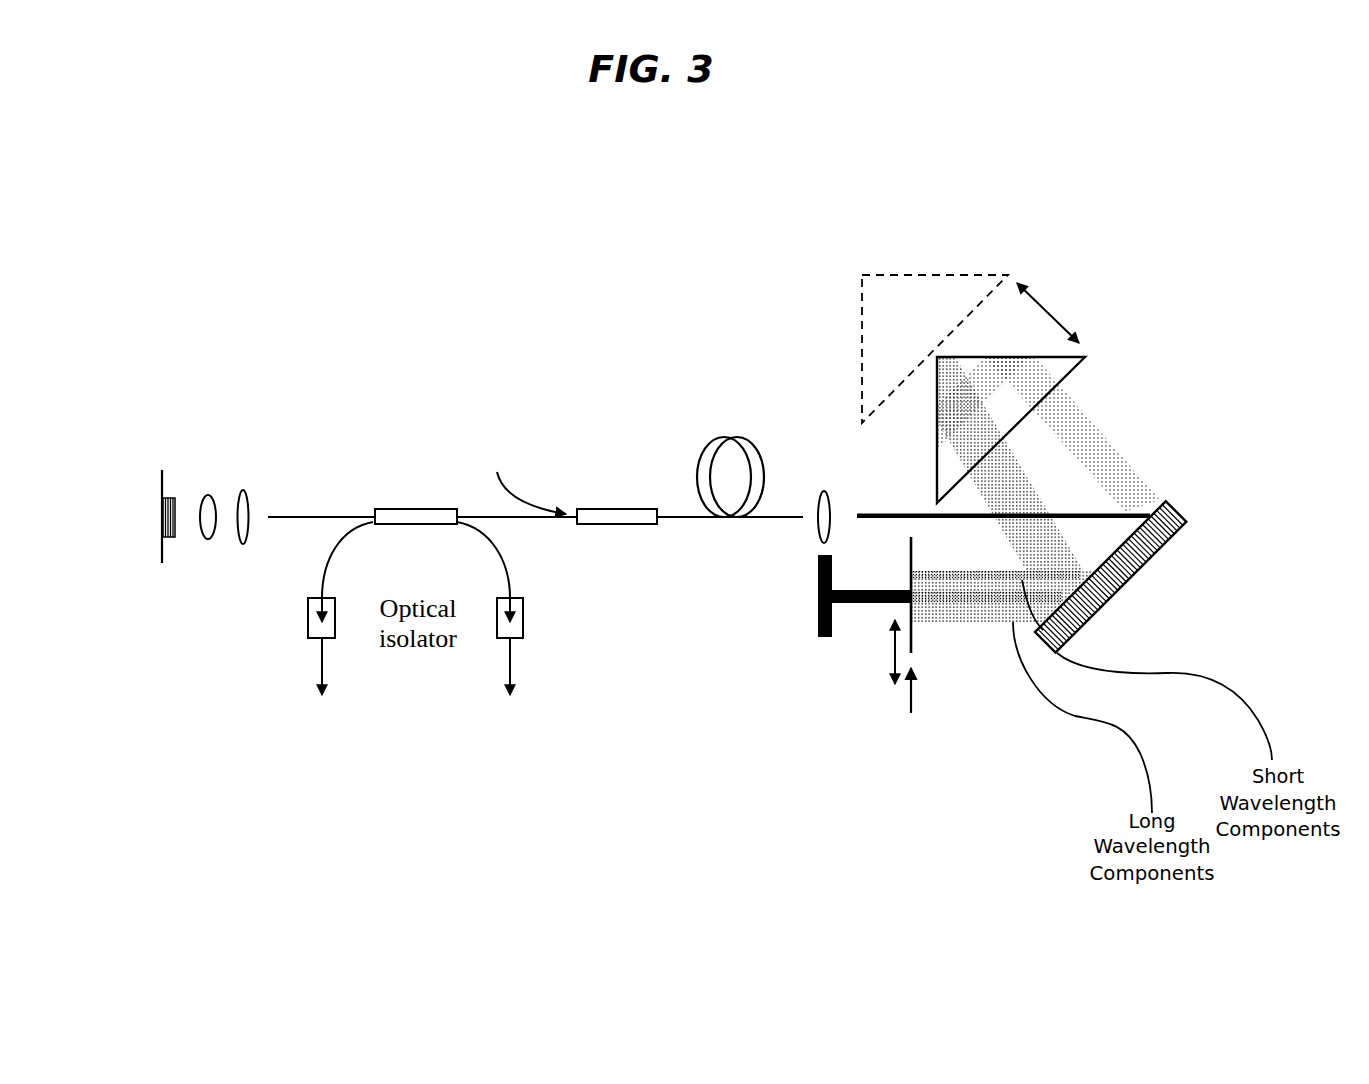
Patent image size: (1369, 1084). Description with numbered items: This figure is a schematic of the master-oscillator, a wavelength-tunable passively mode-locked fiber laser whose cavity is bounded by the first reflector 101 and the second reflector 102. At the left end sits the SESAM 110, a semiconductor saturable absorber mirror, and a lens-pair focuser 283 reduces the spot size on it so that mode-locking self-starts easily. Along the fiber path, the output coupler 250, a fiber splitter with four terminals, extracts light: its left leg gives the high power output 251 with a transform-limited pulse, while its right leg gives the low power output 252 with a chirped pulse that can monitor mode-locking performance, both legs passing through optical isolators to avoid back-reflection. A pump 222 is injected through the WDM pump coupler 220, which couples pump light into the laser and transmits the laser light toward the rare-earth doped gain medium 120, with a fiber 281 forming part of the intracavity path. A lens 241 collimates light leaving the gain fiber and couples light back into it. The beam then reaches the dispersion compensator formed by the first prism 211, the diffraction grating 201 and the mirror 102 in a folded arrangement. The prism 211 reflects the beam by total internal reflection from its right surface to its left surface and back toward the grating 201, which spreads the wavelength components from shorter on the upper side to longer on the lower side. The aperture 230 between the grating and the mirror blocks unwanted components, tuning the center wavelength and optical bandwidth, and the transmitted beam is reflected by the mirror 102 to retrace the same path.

The first reflector 101 is at (155, 552).
The SESAM 110 is at (177, 499).
The focuser 283 is at (233, 547).
The output coupler 250 is at (415, 485).
The pump 222 is at (512, 456).
The pump coupler 220 is at (617, 481).
The fiber 281 is at (670, 521).
The gain medium 120 is at (727, 445).
The lens 241 is at (825, 489).
The second reflector 102 is at (820, 597).
The aperture 230 is at (913, 635).
The first prism 211 is at (1072, 370).
The diffraction grating 201 is at (1144, 576).
The high power output 251 is at (322, 663).
The low power output 252 is at (510, 663).